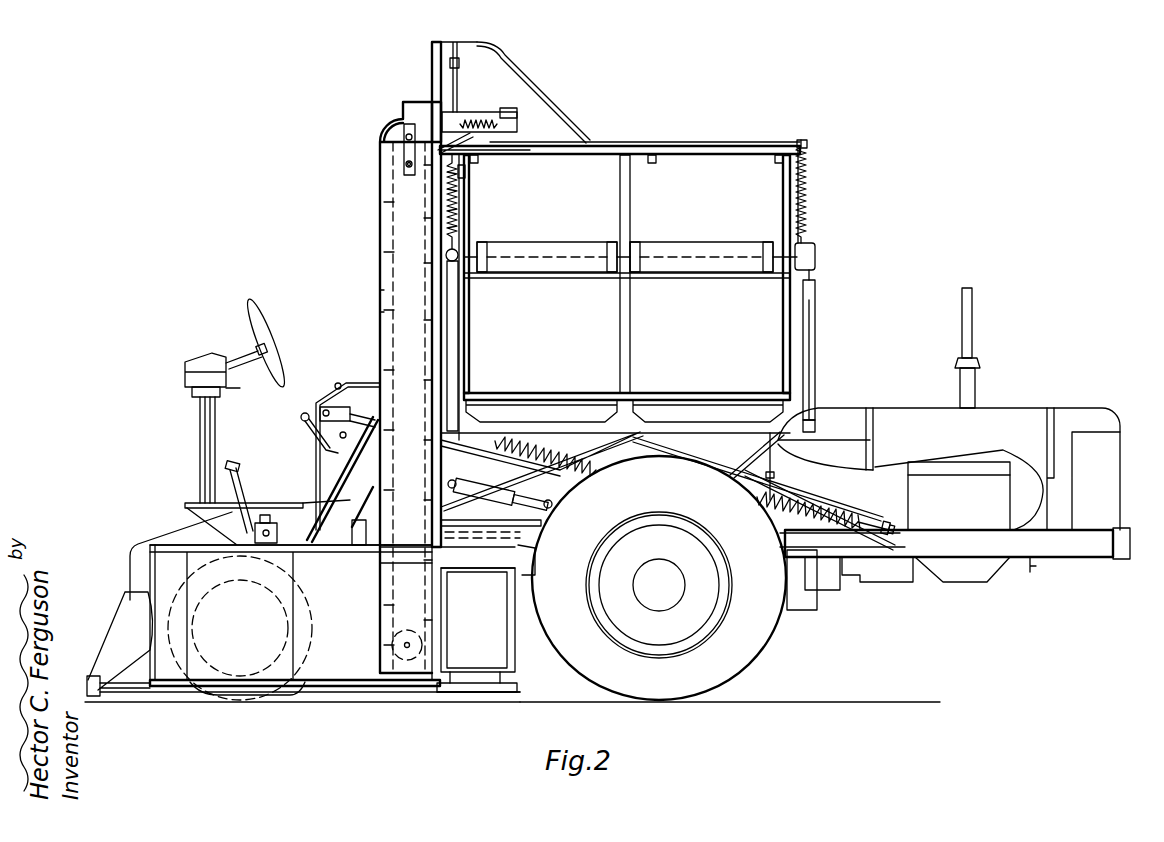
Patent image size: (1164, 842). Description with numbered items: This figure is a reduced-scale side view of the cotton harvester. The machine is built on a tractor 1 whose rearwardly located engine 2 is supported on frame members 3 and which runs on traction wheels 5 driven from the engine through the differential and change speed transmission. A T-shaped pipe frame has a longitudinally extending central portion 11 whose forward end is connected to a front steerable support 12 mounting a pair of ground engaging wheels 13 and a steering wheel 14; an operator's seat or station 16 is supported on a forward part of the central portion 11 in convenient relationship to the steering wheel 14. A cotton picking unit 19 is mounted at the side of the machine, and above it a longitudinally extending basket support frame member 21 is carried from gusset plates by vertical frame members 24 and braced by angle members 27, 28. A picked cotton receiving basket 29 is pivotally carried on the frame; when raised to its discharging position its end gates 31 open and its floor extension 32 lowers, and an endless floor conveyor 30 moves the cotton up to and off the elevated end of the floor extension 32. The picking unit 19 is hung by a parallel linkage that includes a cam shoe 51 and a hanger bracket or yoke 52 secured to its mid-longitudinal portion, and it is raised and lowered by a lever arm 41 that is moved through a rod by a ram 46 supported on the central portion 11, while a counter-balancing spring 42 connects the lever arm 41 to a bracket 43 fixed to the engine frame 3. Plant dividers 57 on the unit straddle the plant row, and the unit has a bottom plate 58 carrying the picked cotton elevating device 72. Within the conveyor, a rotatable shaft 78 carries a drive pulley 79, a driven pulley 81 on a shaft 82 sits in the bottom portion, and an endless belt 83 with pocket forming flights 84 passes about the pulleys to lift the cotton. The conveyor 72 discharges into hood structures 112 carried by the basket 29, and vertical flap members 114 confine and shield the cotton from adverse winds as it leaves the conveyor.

The tractor 1 is at (928, 373).
The engine 2 is at (908, 480).
The frame members 3 is at (1060, 557).
The traction wheel 5 is at (775, 649).
The central portion 11 is at (540, 523).
The front steerable support 12 is at (200, 526).
The ground engaging wheels 13 is at (260, 695).
The steering wheel 14 is at (268, 330).
The operator's seat or station 16 is at (350, 382).
The cotton picking unit 19 is at (344, 612).
The basket support frame member 21 is at (455, 410).
The vertical frame members 24 is at (616, 462).
The angle member 27 is at (722, 472).
The angle member 28 is at (556, 503).
The picked cotton receiving basket 29 is at (683, 221).
The floor conveyor 30 is at (615, 408).
The end gates 31 is at (600, 155).
The floor extension 32 is at (590, 246).
The lever arm 41 is at (322, 432).
The counter-balancing spring 42 is at (835, 508).
The bracket 43 is at (895, 534).
The ram 46 is at (494, 500).
The cam shoe 51 is at (350, 530).
The hanger bracket or yoke 52 is at (300, 528).
The plant dividers 57 is at (120, 628).
The bottom plate 58 is at (375, 695).
The picked cotton elevating device 72 is at (410, 387).
The rotatable shaft 78 is at (404, 137).
The drive pulley 79 is at (403, 162).
The driven pulley 81 is at (406, 632).
The shaft 82 is at (410, 645).
The endless belt 83 is at (380, 316).
The flights 84 is at (380, 290).
The hood structures 112 is at (530, 85).
The vertical flap members 114 is at (432, 62).